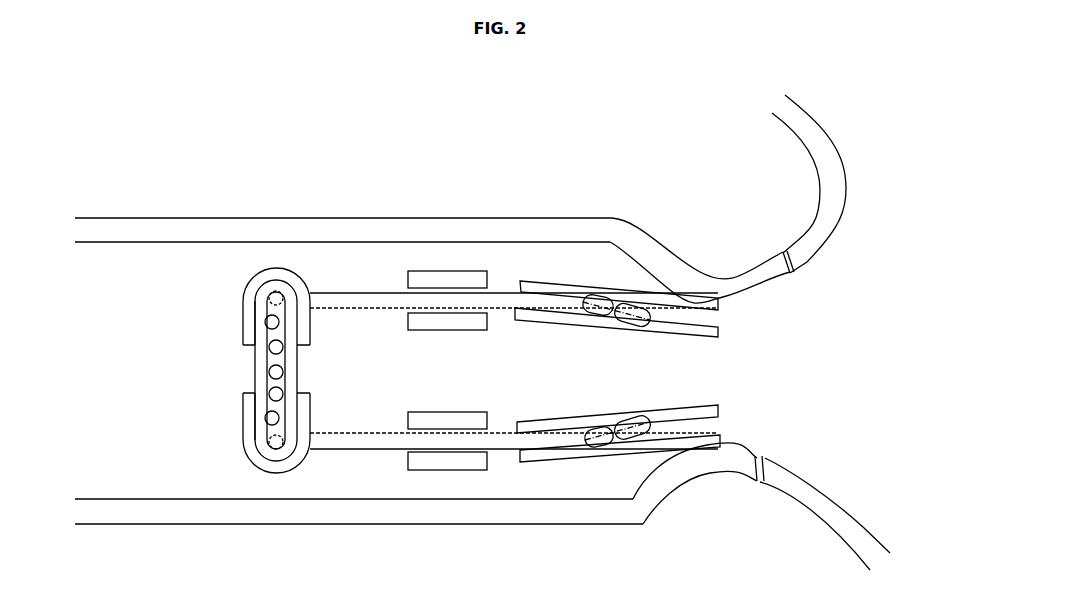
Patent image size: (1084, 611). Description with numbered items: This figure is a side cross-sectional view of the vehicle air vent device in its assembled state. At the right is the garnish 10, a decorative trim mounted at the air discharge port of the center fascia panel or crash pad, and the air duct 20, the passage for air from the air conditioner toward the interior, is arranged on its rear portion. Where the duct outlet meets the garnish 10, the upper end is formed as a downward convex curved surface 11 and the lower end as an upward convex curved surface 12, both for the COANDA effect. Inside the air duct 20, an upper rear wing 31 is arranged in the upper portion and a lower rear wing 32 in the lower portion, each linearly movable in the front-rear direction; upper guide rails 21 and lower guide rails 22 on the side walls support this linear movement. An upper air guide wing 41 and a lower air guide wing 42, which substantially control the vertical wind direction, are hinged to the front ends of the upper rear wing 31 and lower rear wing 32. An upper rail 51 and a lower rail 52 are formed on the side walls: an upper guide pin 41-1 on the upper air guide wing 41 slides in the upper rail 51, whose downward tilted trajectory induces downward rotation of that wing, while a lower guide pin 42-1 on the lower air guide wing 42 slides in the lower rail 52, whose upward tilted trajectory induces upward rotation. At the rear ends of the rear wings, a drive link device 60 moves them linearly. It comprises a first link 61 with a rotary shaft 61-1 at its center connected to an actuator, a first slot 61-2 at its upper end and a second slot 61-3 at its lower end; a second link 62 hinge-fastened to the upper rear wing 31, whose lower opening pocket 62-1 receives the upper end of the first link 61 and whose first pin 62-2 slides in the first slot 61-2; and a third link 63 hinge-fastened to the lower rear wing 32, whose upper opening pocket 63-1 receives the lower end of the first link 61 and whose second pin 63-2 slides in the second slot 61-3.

The garnish 10 is at (833, 178).
The downward convex curved surface 11 is at (753, 292).
The upward convex curved surface 12 is at (740, 452).
The air duct 20 is at (503, 208).
The upper guide rails 21 is at (462, 320).
The lower guide rails 22 is at (468, 460).
The upper rear wing 31 is at (347, 302).
The lower rear wing 32 is at (358, 443).
The upper air guide wing 41 is at (633, 300).
The upper guide pin 41-1 is at (595, 296).
The lower air guide wing 42 is at (642, 438).
The lower guide pin 42-1 is at (590, 440).
The upper rail 51 is at (700, 330).
The lower rail 52 is at (677, 413).
The drive link device 60 is at (246, 255).
The first link 61 is at (242, 382).
The rotary shaft 61-1 is at (273, 367).
The first slot 61-2 is at (275, 322).
The second slot 61-3 is at (273, 425).
The second link 62 is at (280, 268).
The lower opening pocket 62-1 is at (248, 295).
The first pin 62-2 is at (275, 347).
The third link 63 is at (277, 473).
The upper opening pocket 63-1 is at (260, 448).
The second pin 63-2 is at (280, 393).